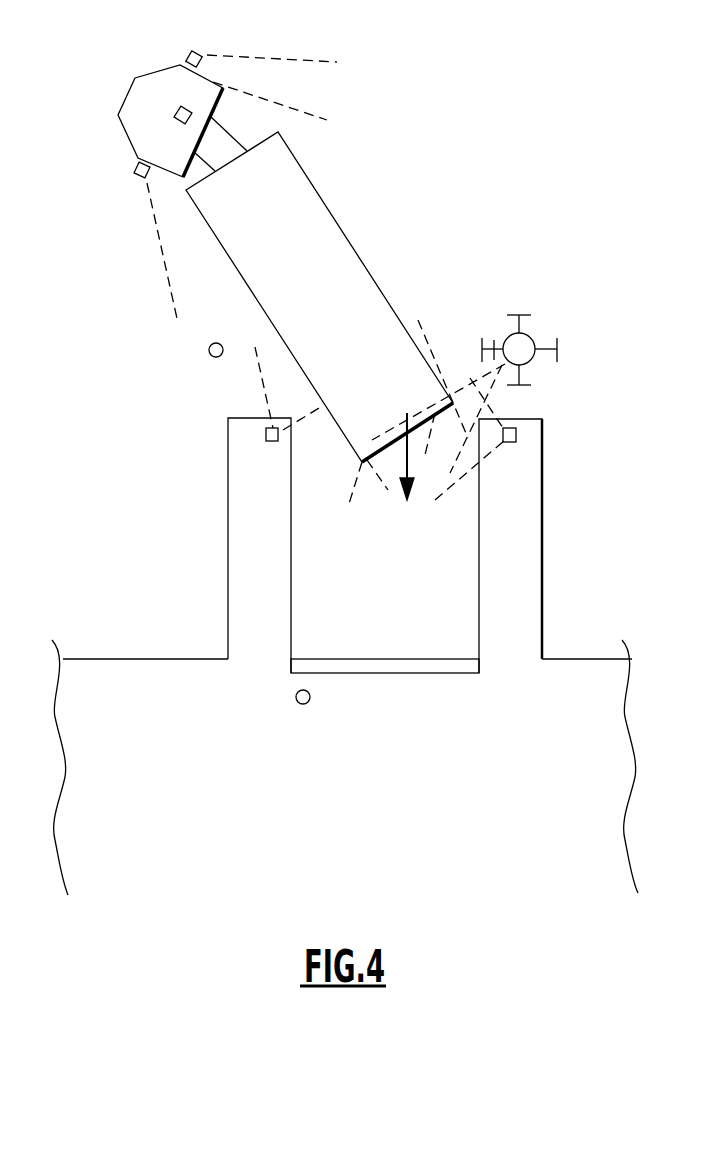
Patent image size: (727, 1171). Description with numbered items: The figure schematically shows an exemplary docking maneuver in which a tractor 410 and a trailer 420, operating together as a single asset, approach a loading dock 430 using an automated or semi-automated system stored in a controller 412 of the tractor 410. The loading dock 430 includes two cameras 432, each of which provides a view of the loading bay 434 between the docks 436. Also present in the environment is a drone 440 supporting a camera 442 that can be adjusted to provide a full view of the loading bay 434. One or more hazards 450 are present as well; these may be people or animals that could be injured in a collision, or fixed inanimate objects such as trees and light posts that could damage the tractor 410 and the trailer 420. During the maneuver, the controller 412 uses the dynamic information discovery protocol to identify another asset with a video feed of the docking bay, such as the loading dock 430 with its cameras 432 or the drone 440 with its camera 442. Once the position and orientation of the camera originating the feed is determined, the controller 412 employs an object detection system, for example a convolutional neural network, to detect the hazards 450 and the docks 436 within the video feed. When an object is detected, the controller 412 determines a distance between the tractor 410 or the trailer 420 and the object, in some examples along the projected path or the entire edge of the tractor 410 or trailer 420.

The tractor 410 is at (152, 73).
The controller 412 is at (174, 112).
The trailer 420 is at (355, 245).
The loading dock 430 is at (370, 674).
The cameras 432 is at (266, 434).
The loading bay 434 is at (409, 597).
The docks 436 is at (257, 552).
The drone 440 is at (535, 338).
The camera 442 is at (495, 357).
The hazards 450 is at (208, 352).